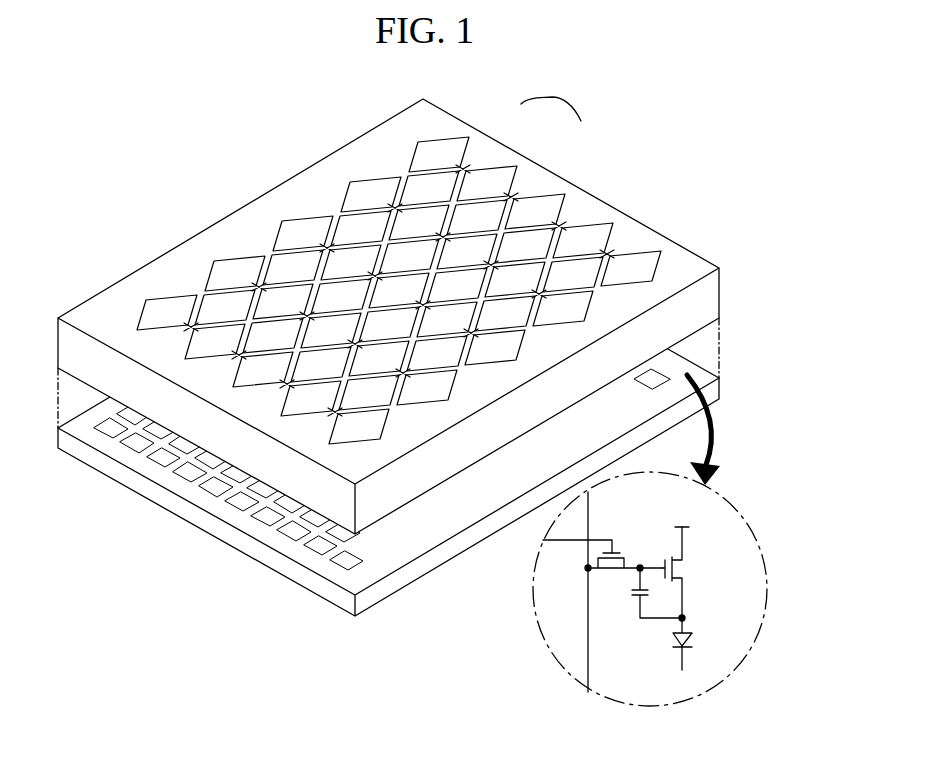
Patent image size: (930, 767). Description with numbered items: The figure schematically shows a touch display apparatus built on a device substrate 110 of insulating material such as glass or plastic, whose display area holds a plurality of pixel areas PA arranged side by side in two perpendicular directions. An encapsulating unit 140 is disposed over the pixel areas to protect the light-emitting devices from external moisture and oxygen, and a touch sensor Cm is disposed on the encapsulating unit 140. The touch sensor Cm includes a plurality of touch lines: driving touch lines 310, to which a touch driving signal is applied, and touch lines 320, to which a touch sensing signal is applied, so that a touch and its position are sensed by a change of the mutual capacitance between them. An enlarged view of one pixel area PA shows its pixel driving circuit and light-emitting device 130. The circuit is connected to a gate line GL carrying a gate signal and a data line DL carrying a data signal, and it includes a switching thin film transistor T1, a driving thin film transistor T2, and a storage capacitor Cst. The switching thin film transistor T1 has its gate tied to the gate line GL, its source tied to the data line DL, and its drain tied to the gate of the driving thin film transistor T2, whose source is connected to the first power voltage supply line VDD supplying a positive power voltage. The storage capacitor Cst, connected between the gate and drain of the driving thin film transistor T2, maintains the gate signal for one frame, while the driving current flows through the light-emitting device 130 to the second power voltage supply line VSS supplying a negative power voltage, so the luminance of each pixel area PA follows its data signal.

The device substrate 110 is at (711, 393).
The encapsulating unit 140 is at (417, 316).
The driving touch lines 310 is at (477, 195).
The touch lines 320 is at (535, 192).
The touch sensor Cm is at (551, 97).
The pixel area PA is at (686, 358).
The light-emitting device 130 is at (693, 641).
The gate line GL is at (577, 554).
The data line DL is at (603, 592).
The switching thin film transistor T1 is at (624, 555).
The driving thin film transistor T2 is at (687, 574).
The storage capacitor Cst is at (642, 593).
The first power voltage supply line VDD is at (685, 513).
The second power voltage supply line VSS is at (684, 685).